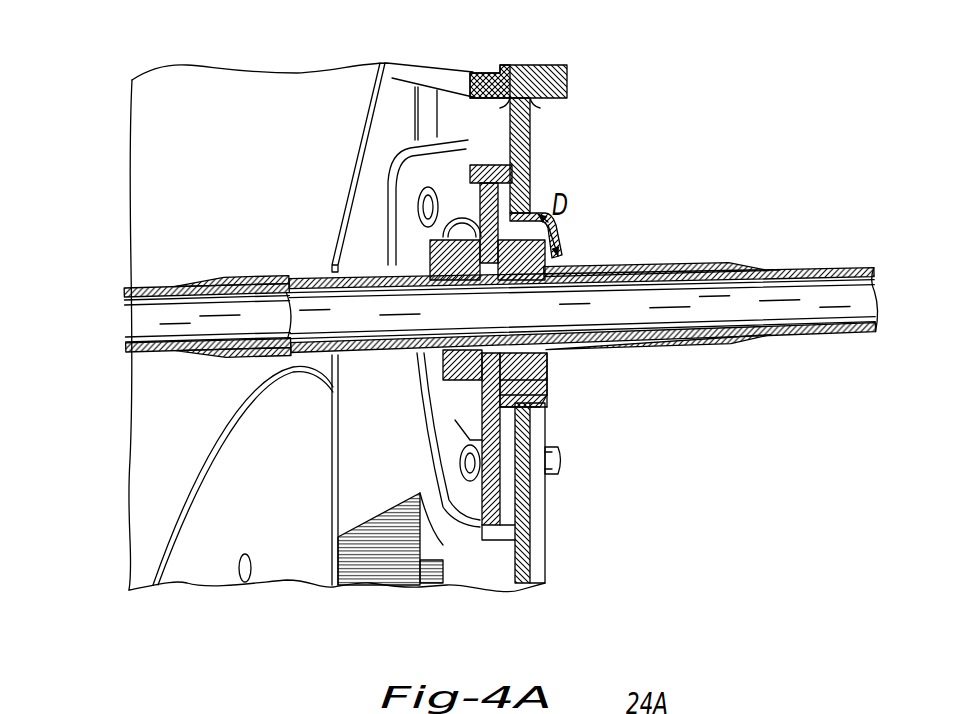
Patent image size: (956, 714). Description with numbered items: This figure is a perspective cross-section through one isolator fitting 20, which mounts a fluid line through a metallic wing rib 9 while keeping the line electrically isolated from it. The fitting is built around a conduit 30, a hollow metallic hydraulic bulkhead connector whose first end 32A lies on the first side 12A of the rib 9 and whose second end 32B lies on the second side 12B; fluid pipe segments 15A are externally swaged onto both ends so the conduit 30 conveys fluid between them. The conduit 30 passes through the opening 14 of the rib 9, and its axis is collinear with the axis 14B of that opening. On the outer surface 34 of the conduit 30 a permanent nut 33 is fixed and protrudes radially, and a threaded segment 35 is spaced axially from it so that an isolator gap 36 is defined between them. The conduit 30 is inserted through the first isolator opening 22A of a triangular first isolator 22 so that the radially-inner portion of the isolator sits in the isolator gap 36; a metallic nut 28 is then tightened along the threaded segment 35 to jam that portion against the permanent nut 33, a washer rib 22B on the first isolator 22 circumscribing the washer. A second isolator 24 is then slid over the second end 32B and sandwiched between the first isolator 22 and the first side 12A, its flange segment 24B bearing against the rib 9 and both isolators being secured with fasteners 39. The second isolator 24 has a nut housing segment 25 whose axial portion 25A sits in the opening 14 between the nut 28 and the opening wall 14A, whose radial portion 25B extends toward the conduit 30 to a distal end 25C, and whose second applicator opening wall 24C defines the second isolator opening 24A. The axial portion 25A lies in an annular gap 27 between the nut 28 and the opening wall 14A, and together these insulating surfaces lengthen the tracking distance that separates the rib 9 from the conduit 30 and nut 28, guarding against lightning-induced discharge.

The rib 9 is at (518, 64).
The first side 12A is at (497, 103).
The second side 12B is at (532, 125).
The opening 14 is at (548, 405).
The opening wall 14A is at (547, 455).
The axis 14B is at (802, 300).
The fluid pipe segments 15A is at (150, 307).
The isolator fitting 20 is at (360, 227).
The first isolator 22 is at (390, 223).
The first isolator opening 22A is at (413, 143).
The washer rib 22B is at (460, 410).
The second isolator 24 is at (530, 570).
The second isolator opening 24A is at (560, 358).
The flange segment 24B is at (505, 530).
The second applicator opening wall 24C is at (555, 385).
The nut housing segment 25 is at (560, 392).
The axial portion 25A is at (550, 420).
The radial portion 25B is at (560, 402).
The distal end 25C is at (545, 295).
The gap 27 is at (525, 500).
The nut 28 is at (470, 430).
The conduit 30 is at (253, 263).
The first end 32A is at (192, 280).
The second end 32B is at (758, 368).
The permanent nut 33 is at (420, 203).
The outer surface 34 is at (637, 268).
The threaded segment 35 is at (545, 305).
The isolator gap 36 is at (470, 390).
The fasteners 39 is at (380, 175).